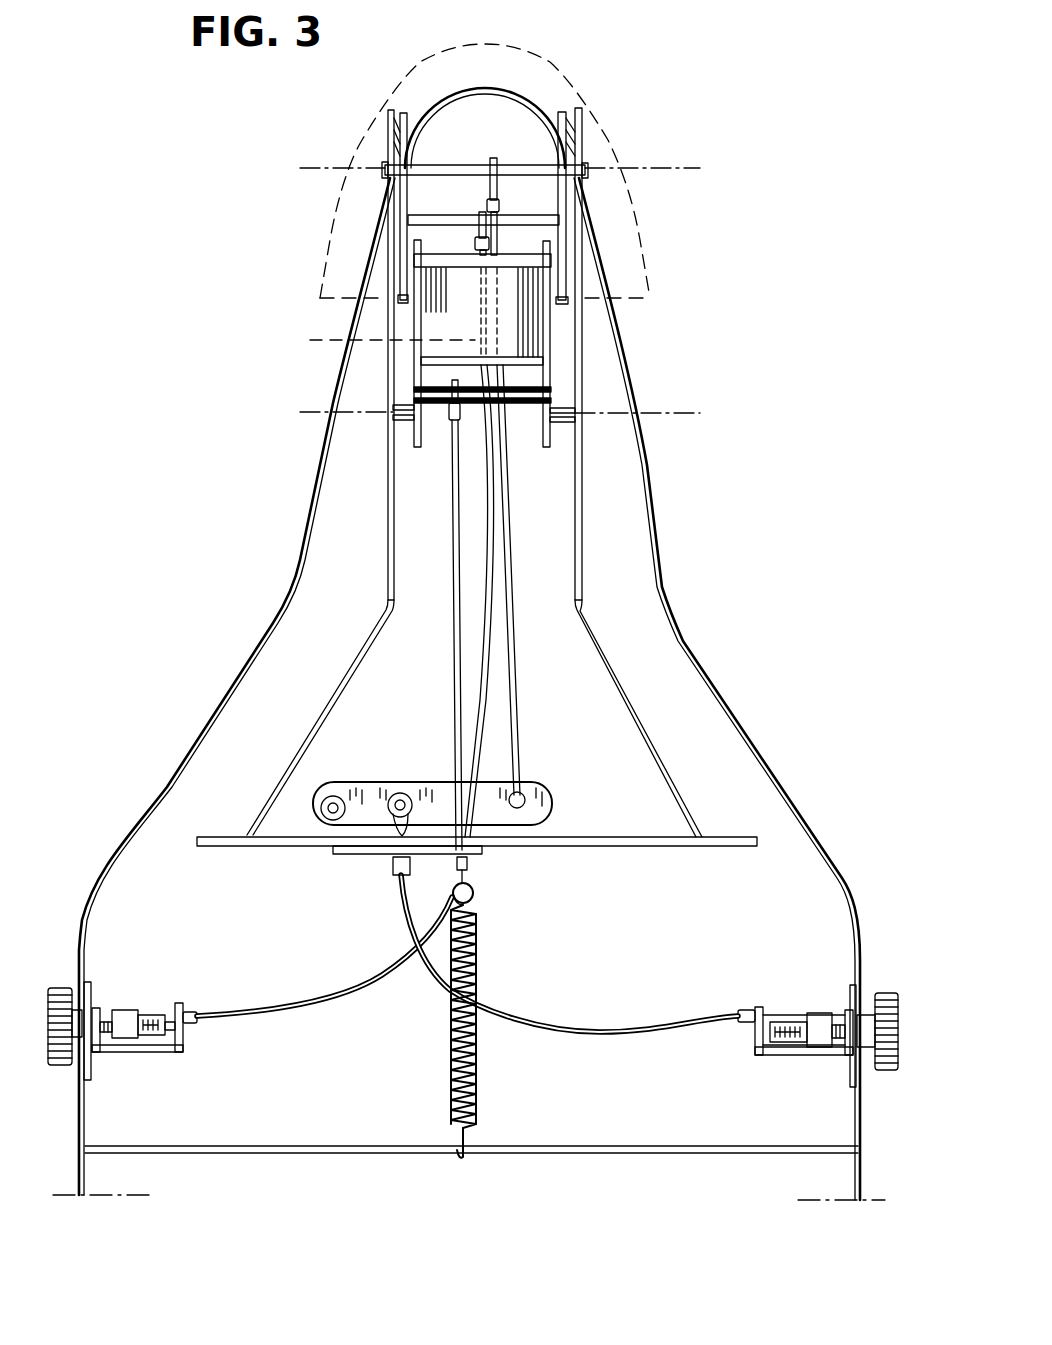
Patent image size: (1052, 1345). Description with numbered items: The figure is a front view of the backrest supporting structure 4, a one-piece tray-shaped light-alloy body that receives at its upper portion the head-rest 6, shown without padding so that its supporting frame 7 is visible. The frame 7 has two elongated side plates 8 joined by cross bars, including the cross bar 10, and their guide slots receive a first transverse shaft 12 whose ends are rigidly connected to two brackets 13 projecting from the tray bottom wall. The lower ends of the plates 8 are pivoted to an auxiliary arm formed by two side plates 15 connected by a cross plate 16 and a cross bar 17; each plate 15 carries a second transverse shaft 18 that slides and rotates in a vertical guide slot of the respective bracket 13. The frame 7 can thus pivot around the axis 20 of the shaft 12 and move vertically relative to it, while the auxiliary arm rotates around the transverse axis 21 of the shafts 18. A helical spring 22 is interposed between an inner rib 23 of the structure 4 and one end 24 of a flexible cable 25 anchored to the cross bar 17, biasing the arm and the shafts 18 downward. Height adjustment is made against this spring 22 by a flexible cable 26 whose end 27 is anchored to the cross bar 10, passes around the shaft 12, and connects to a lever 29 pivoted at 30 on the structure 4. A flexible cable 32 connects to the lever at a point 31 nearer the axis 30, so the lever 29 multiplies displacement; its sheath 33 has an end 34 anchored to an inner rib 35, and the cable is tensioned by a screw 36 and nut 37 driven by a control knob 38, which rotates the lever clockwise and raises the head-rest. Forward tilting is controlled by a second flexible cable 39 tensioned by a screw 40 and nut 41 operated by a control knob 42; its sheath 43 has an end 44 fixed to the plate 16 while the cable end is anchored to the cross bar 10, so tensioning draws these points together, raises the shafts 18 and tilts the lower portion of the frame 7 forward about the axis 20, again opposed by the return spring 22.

The supporting structure 4 is at (741, 724).
The head-rest 6 is at (649, 283).
The supporting frame 7 is at (570, 121).
The side plates 8 is at (402, 200).
The cross bar 10 is at (540, 221).
The first transverse shaft 12 is at (436, 164).
The brackets 13 is at (388, 247).
The side plates 15 is at (418, 373).
The cross plate 16 is at (538, 330).
The cross bar 17 is at (520, 404).
The second transverse shaft 18 is at (400, 421).
The axis 20 is at (310, 170).
The transverse axis 21 is at (673, 417).
The helical spring 22 is at (478, 957).
The inner rib 23 is at (399, 1156).
The end of flexible cable 24 is at (469, 873).
The flexible cable 25 is at (453, 665).
The flexible cable 26 is at (518, 752).
The end 27 is at (501, 207).
The lever 29 is at (546, 802).
The articulation axis 30 is at (338, 796).
The connecting point 31 is at (403, 792).
The flexible cable 32 is at (775, 1012).
The sheath 33 is at (626, 1034).
The sheath end 34 is at (393, 862).
The inner rib 35 is at (667, 850).
The screw 36 is at (785, 1038).
The nut 37 is at (823, 1028).
The control knob 38 is at (893, 1072).
The second flexible cable 39 is at (176, 1010).
The screw 40 is at (148, 1016).
The nut 41 is at (124, 1010).
The control knob 42 is at (60, 988).
The sheath 43 is at (328, 1003).
The sheath end 44 is at (466, 393).